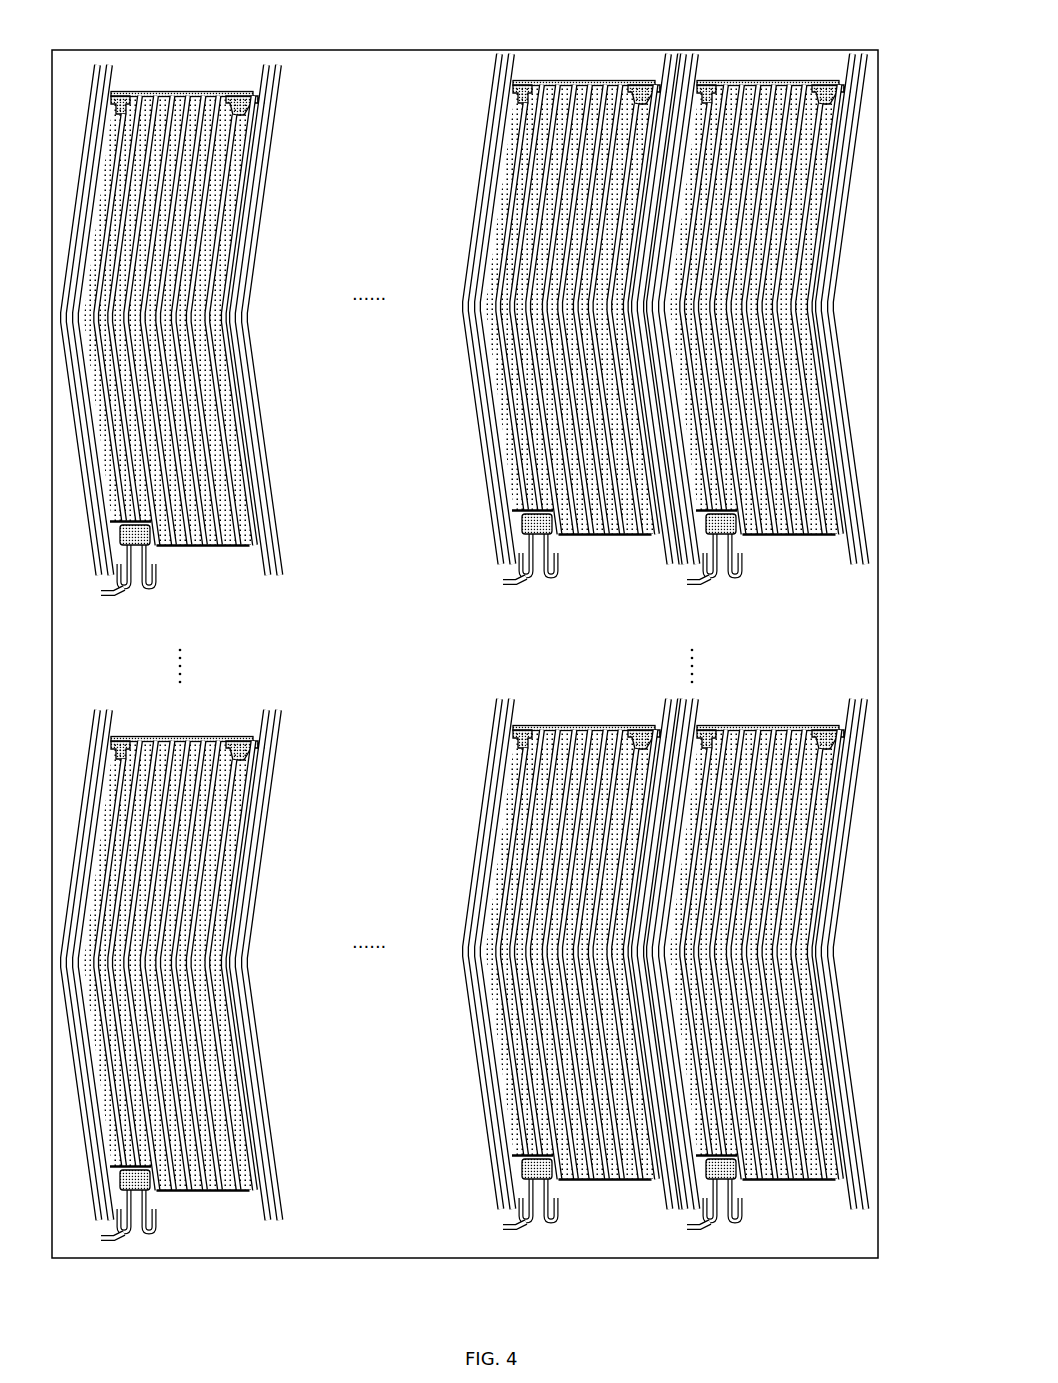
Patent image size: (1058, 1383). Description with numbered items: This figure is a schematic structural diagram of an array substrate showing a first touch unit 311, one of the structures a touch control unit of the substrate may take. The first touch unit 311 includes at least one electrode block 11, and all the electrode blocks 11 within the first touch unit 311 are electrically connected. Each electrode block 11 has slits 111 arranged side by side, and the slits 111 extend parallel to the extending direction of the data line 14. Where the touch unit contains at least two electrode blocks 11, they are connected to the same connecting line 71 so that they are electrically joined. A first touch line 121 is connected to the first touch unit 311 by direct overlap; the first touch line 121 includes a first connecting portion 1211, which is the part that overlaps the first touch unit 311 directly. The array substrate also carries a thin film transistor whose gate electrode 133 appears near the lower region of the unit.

The electrode block 11 is at (555, 79).
The slits 111 is at (740, 76).
The connecting line 71 is at (811, 76).
The first connecting portion 1211 is at (822, 95).
The first touch line 121 is at (822, 183).
The data line 14 is at (828, 232).
The first touch unit 311 is at (871, 346).
The gate electrode 133 is at (832, 569).